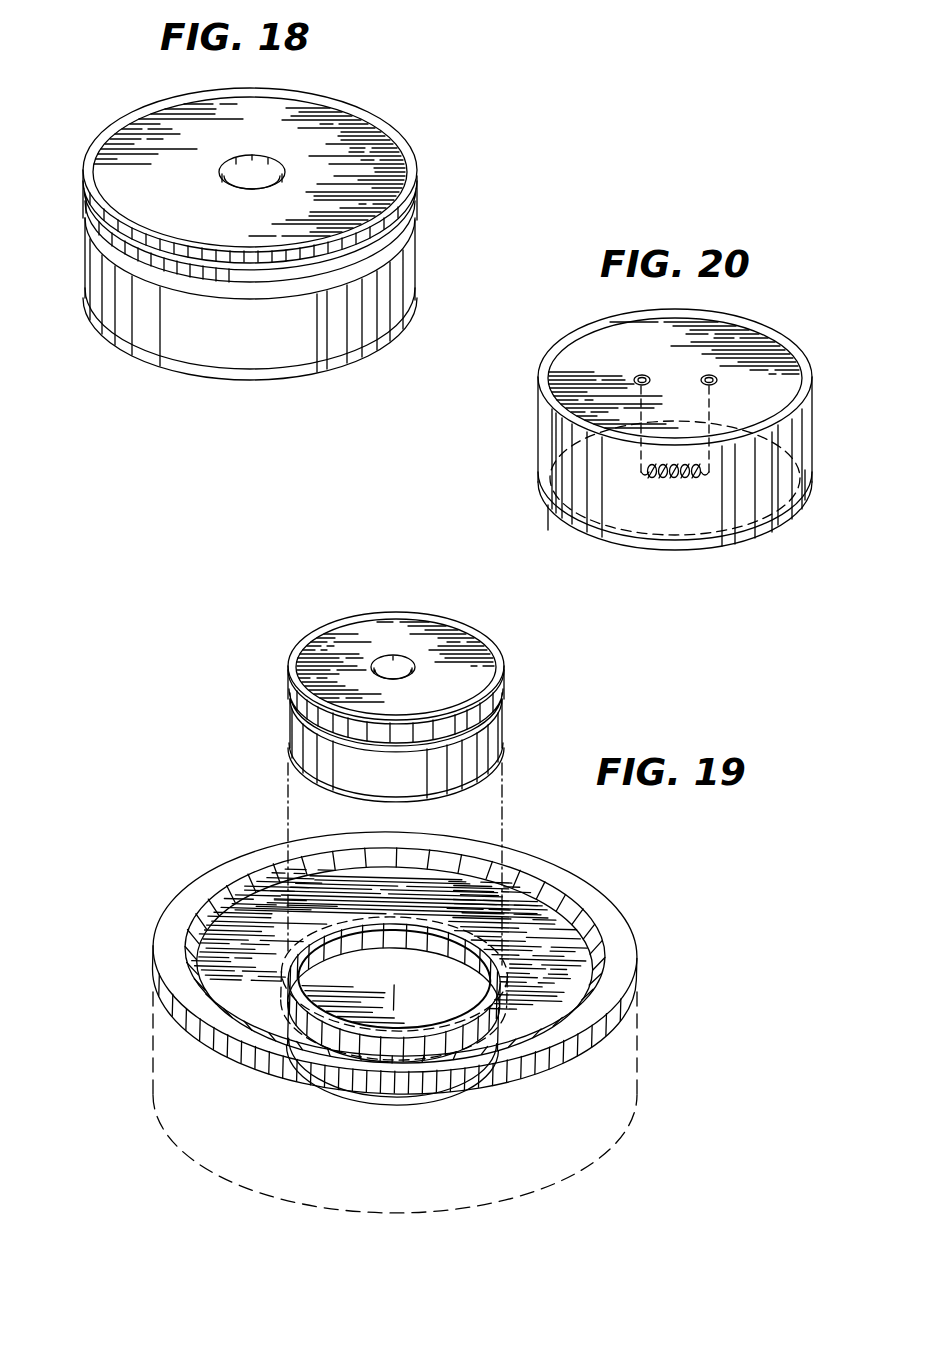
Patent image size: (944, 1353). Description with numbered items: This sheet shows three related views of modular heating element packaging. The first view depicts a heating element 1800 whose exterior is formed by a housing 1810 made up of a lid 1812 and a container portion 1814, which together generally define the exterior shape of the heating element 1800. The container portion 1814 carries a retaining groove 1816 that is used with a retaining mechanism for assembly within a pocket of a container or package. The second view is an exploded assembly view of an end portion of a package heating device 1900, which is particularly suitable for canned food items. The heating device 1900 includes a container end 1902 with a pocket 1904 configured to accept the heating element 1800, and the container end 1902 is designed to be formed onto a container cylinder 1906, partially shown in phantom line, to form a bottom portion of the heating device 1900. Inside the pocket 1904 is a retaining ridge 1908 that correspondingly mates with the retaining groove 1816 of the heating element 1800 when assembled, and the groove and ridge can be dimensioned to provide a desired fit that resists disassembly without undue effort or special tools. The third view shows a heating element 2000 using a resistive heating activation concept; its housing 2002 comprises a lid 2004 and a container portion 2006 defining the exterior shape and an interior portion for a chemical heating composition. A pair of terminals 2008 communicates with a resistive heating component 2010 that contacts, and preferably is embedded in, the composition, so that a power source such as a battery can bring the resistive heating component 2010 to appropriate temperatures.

In FIG. 18, the heating element 1800 is at (365, 98).
In FIG. 19, the heating element 1800 is at (311, 618).
In FIG. 18, the lid 1812 is at (365, 148).
In FIG. 18, the housing 1810 is at (417, 203).
In FIG. 18, the retaining groove 1816 is at (207, 287).
In FIG. 18, the container portion 1814 is at (294, 345).
In FIG. 19, the package heating device 1900 is at (127, 1174).
In FIG. 19, the container end 1902 is at (637, 966).
In FIG. 19, the retaining ridge 1908 is at (400, 950).
In FIG. 19, the pocket 1904 is at (412, 1057).
In FIG. 19, the container cylinder 1906 is at (637, 1072).
In FIG. 20, the heating element 2000 is at (538, 353).
In FIG. 20, the lid 2004 is at (735, 357).
In FIG. 20, the housing 2002 is at (538, 449).
In FIG. 20, the container portion 2006 is at (782, 497).
In FIG. 20, the terminals 2008 is at (706, 376).
In FIG. 20, the resistive heating component 2010 is at (685, 478).